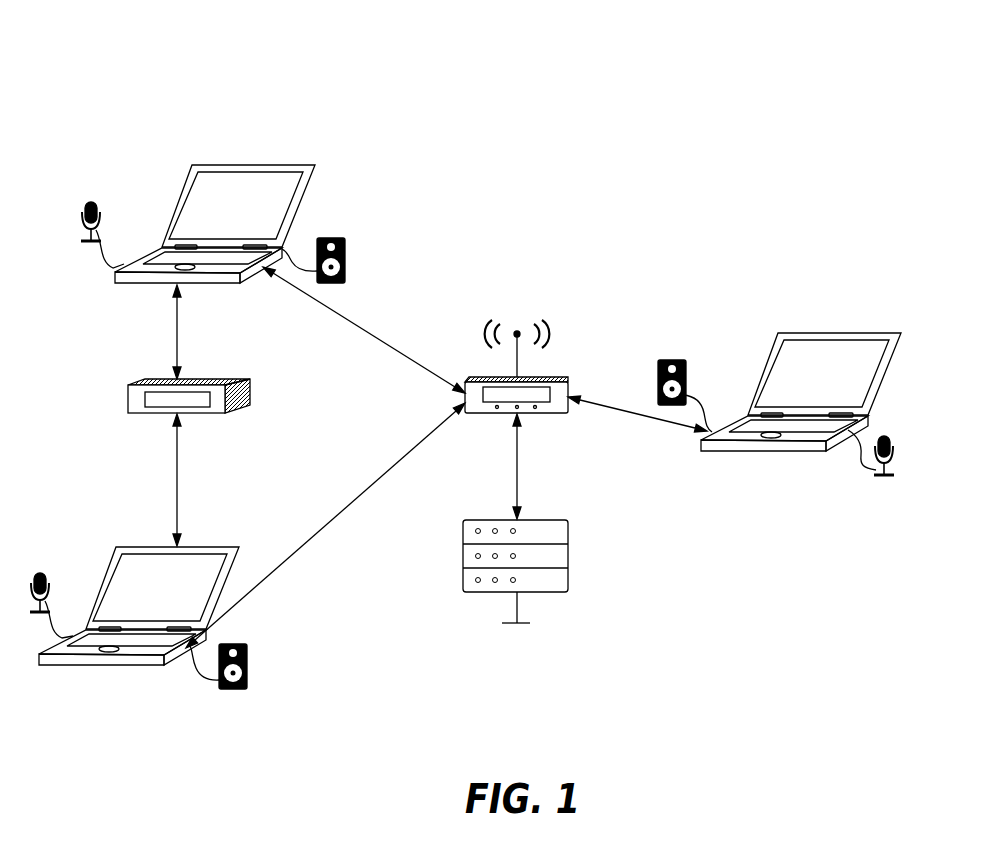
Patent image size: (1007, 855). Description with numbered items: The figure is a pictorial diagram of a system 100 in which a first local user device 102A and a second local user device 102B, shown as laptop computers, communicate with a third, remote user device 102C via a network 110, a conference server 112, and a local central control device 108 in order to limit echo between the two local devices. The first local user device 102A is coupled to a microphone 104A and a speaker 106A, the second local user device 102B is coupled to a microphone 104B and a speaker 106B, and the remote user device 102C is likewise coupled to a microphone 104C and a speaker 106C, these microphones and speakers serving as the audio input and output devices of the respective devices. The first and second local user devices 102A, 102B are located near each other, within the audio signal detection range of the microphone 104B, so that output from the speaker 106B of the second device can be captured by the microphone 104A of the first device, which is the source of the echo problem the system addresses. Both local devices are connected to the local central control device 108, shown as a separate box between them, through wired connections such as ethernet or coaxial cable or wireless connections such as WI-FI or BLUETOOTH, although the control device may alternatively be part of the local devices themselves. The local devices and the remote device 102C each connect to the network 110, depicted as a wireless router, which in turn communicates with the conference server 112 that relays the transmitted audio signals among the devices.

The system 100 is at (570, 94).
The first local user device 102A is at (255, 164).
The second local user device 102B is at (212, 547).
The third, remote user device 102C is at (840, 332).
The microphone 104A is at (92, 203).
The microphone 104B is at (38, 575).
The microphone 104C is at (670, 360).
The speaker 106A is at (323, 238).
The speaker 106B is at (240, 645).
The speaker 106C is at (882, 437).
The local central control device 108 is at (235, 380).
The network 110 is at (543, 378).
The conference server 112 is at (545, 520).